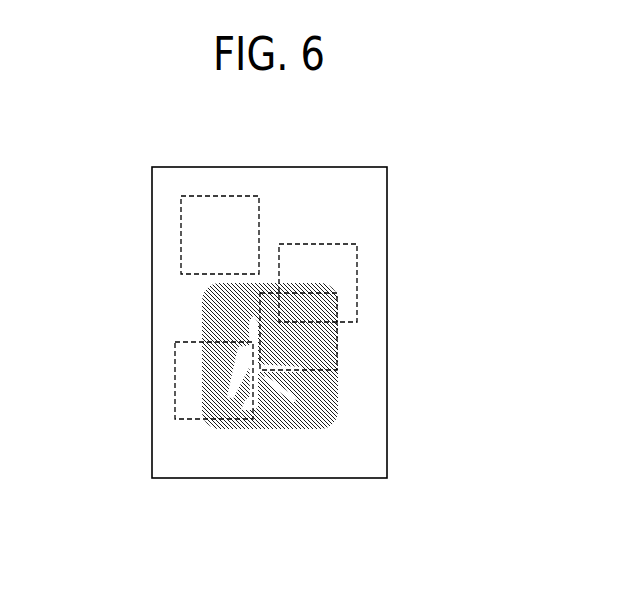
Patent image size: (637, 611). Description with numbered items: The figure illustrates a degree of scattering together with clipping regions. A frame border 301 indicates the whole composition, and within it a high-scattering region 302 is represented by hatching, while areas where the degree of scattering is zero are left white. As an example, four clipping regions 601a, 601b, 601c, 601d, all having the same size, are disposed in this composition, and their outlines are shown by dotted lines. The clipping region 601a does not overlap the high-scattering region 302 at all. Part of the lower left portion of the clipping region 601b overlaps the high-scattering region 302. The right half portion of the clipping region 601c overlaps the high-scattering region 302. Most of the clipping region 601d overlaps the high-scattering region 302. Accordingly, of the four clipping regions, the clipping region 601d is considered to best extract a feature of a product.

The frame border 301 is at (254, 167).
The high-scattering region 302 is at (268, 420).
The clipping region 601a is at (181, 218).
The clipping region 601b is at (357, 275).
The clipping region 601c is at (175, 363).
The clipping region 601d is at (338, 350).